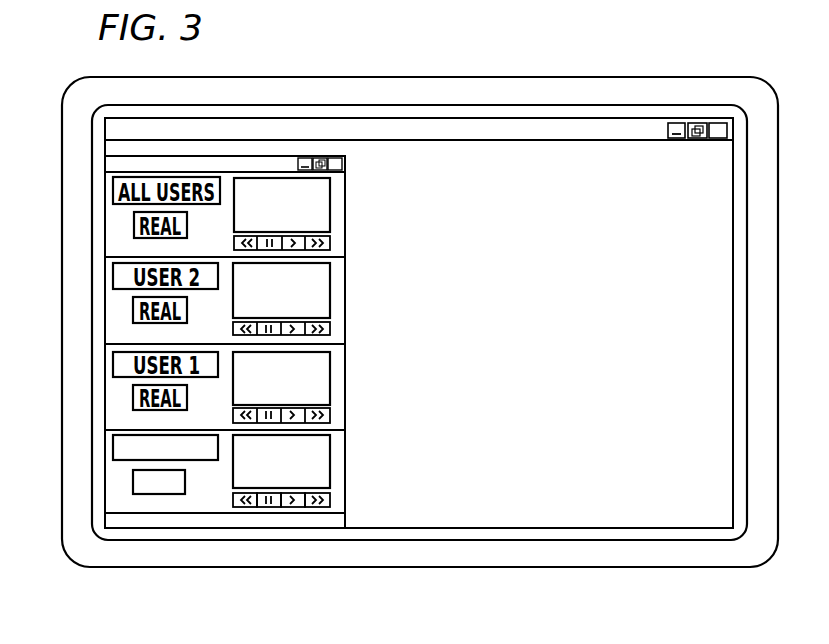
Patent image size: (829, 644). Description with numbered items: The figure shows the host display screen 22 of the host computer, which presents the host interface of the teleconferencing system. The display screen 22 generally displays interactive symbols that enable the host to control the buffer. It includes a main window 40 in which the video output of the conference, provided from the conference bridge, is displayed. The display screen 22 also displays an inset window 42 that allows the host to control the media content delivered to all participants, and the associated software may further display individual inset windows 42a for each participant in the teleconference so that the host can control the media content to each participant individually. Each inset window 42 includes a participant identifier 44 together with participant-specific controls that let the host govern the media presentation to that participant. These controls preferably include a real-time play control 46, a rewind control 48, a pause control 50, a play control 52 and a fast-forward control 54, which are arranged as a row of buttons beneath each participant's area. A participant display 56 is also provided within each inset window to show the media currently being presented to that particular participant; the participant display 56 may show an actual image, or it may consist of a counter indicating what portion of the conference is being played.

The display screen 22 is at (413, 77).
The main window 40 is at (546, 174).
The inset window 42 is at (346, 184).
The individual inset windows 42a is at (343, 211).
The participant identifier 44 is at (113, 446).
The real-time play control 46 is at (133, 482).
The rewind control 48 is at (246, 508).
The pause control 50 is at (269, 508).
The play control 52 is at (292, 508).
The fast-forward control 54 is at (318, 508).
The participant display 56 is at (318, 476).